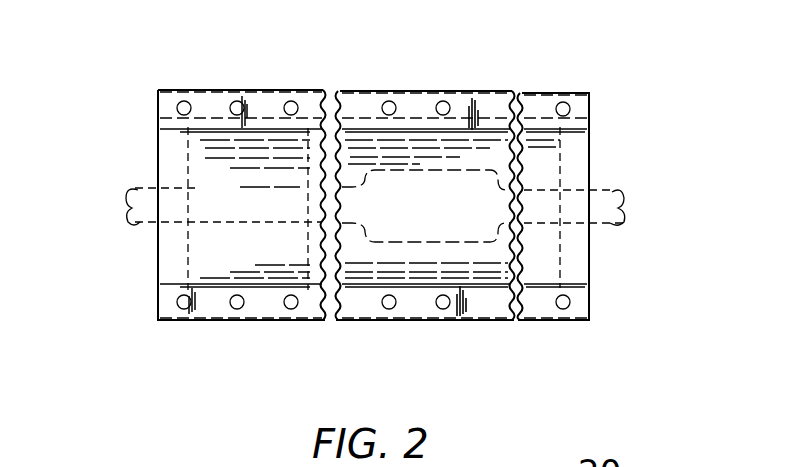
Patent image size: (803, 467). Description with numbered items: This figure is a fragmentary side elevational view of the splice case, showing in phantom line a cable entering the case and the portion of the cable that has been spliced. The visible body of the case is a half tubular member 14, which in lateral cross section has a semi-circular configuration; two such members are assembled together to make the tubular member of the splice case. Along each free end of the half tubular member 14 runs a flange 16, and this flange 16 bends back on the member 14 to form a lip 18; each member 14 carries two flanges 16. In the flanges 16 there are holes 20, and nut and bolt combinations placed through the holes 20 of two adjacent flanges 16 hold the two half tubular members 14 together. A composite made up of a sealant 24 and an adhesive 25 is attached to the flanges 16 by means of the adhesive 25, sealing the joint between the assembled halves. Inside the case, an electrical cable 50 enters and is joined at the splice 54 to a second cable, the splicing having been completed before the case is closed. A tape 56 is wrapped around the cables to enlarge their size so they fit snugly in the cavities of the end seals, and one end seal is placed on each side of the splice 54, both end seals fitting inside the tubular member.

The half tubular member 14 is at (160, 123).
The flange 16 is at (412, 108).
The lip 18 is at (570, 92).
The holes 20 is at (184, 101).
The sealant 24 is at (590, 130).
The adhesive 25 is at (590, 121).
The electrical cable 50 is at (137, 233).
The splice 54 is at (462, 206).
The tape 56 is at (168, 236).